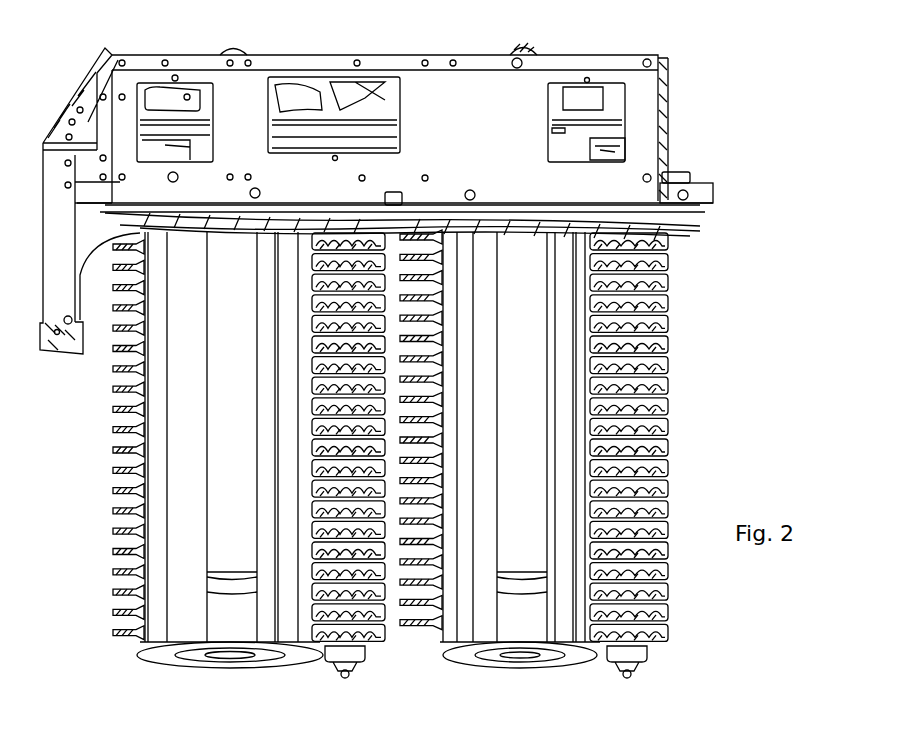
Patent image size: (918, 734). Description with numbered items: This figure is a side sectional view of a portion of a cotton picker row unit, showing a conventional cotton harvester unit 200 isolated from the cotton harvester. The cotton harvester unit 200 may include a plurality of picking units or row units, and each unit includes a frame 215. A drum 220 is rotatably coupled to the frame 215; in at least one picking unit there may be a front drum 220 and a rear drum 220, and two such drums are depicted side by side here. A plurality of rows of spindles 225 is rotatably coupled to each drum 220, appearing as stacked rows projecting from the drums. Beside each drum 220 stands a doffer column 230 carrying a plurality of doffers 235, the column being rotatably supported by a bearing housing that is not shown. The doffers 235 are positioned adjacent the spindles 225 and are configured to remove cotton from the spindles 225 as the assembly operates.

The cotton harvester unit 200 is at (752, 89).
The frame 215 is at (648, 147).
The drum 220 is at (245, 440).
The spindles 225 is at (110, 431).
The doffer column 230 is at (290, 385).
The doffers 235 is at (310, 516).